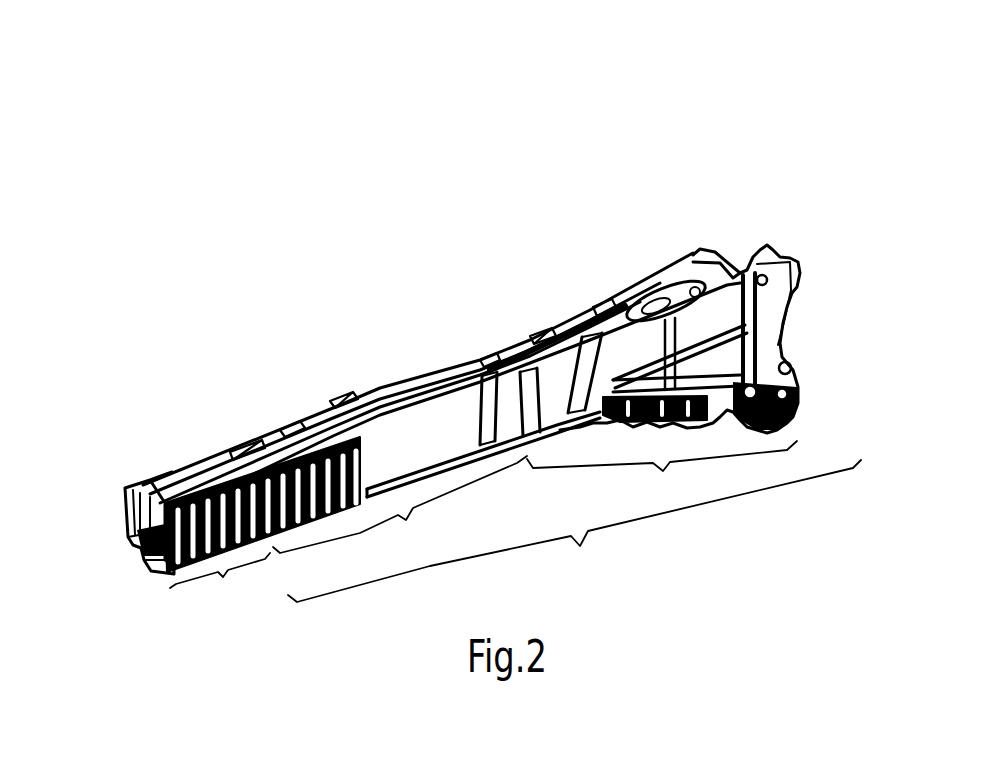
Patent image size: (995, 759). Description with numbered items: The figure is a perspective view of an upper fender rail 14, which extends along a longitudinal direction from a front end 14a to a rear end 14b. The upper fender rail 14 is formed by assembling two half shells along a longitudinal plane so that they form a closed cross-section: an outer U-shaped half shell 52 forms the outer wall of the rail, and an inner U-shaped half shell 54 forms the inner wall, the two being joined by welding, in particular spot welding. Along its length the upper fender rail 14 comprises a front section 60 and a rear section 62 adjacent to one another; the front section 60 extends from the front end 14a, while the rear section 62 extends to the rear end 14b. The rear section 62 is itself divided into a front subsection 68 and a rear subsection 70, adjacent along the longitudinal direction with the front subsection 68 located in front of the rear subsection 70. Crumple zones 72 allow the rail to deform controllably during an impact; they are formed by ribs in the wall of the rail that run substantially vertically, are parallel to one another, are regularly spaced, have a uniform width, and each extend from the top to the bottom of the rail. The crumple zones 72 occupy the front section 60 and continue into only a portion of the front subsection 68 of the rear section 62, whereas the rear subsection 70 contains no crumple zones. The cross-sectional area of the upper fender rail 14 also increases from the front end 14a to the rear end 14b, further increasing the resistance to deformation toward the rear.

The upper fender rail 14 is at (277, 163).
The front end 14a is at (130, 472).
The rear end 14b is at (748, 222).
The outer U-shaped half shell 52 is at (127, 516).
The inner U-shaped half shell 54 is at (180, 562).
The front section 60 is at (220, 583).
The rear section 62 is at (574, 531).
The front subsection 68 is at (400, 506).
The rear subsection 70 is at (662, 473).
The crumple zones 72 is at (240, 447).